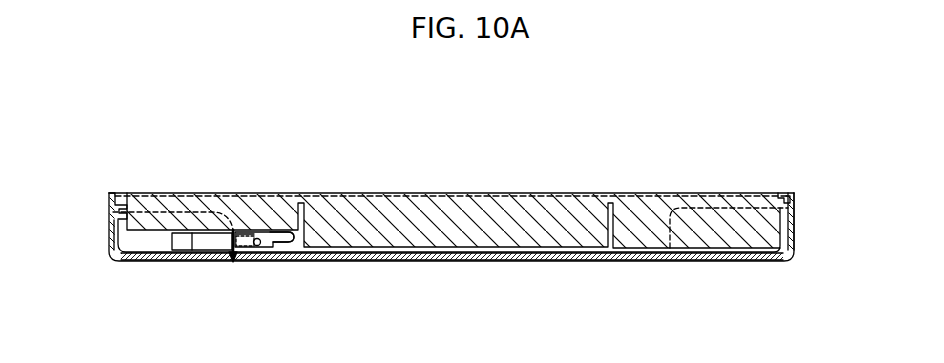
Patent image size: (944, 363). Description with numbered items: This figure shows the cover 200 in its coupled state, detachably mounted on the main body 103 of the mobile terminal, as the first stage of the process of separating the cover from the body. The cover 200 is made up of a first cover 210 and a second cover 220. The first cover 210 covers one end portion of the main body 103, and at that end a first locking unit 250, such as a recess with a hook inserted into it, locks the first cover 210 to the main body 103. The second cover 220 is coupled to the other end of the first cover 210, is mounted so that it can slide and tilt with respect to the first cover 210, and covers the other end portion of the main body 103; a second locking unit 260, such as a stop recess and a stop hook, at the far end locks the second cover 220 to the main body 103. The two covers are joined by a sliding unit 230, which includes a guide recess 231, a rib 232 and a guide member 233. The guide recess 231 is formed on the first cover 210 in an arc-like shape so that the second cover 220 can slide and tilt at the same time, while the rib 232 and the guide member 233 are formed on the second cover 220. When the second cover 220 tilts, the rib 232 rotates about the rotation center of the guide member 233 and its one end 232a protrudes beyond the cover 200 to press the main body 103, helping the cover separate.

The main body 103 is at (653, 197).
The cover 200 is at (310, 319).
The first cover 210 is at (285, 262).
The second cover 220 is at (200, 262).
The sliding unit 230 is at (172, 118).
The guide recess 231 is at (245, 233).
The rib 232 is at (208, 242).
The one end of the rib 232a is at (285, 236).
The guide member 233 is at (258, 238).
The first locking unit 250 is at (788, 182).
The second locking unit 260 is at (103, 197).